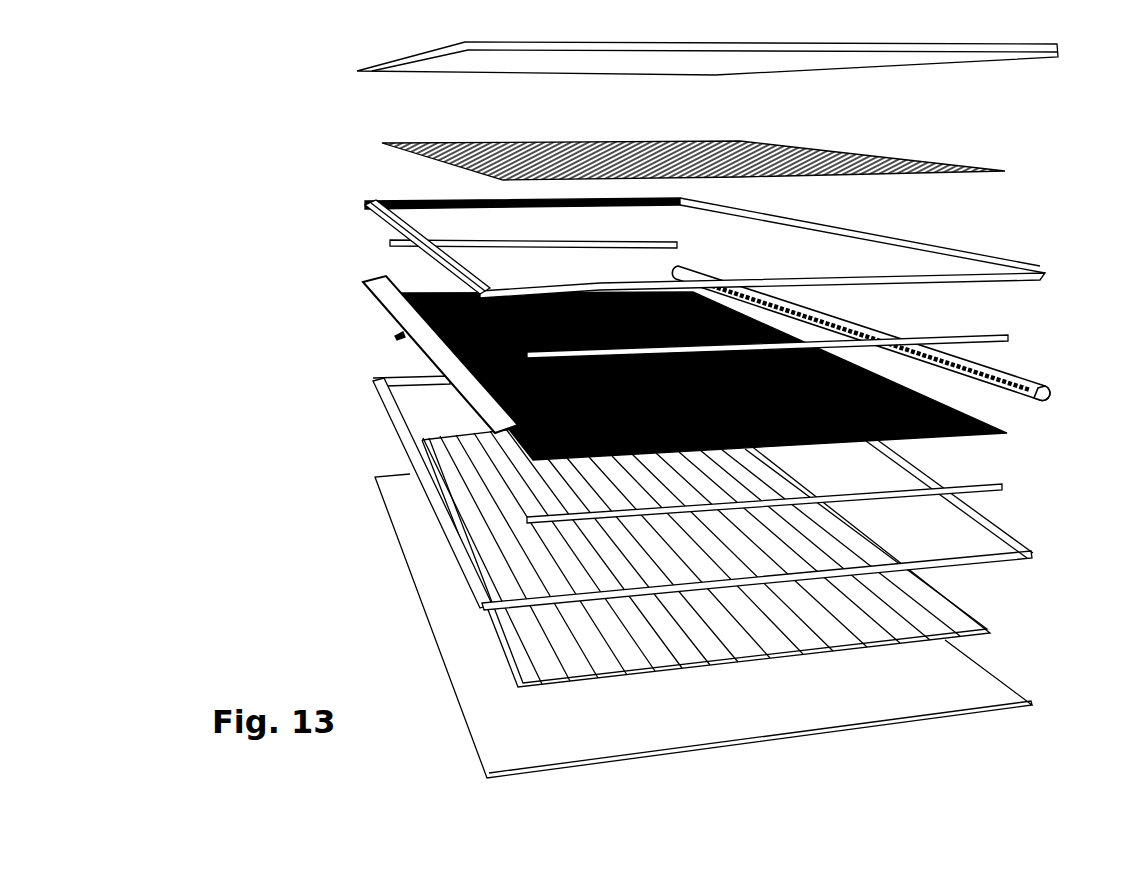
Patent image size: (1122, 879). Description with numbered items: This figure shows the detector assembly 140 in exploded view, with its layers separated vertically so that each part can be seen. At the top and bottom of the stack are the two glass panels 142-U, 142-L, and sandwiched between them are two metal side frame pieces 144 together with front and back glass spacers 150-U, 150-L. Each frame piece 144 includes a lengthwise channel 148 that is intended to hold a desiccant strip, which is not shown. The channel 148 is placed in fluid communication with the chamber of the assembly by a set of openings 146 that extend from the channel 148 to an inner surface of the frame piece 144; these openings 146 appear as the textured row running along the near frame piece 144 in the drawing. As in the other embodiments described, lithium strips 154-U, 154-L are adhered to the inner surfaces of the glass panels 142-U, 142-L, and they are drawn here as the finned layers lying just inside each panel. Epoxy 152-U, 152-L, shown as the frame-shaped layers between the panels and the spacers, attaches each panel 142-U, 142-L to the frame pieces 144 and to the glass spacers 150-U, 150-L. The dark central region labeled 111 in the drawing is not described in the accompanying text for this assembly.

The detector assembly 140 is at (297, 603).
The glass panel 142-U is at (1025, 52).
The lithium strip 154-U is at (984, 174).
The epoxy 152-U is at (1022, 267).
The glass spacer 150-U is at (678, 242).
The openings 146 is at (810, 318).
The metal side frame piece 144 is at (380, 300).
The lengthwise channel 148 is at (1027, 399).
The display panel 111 is at (1007, 432).
The glass spacer 150-L is at (995, 490).
The epoxy 152-L is at (1022, 555).
The lithium strip 154-L is at (957, 619).
The glass panel 142-L is at (1000, 716).